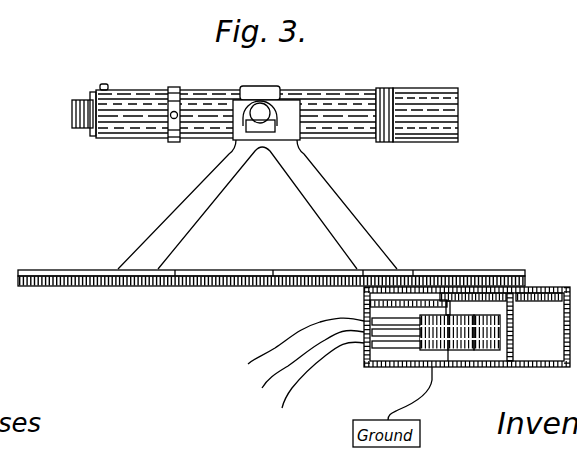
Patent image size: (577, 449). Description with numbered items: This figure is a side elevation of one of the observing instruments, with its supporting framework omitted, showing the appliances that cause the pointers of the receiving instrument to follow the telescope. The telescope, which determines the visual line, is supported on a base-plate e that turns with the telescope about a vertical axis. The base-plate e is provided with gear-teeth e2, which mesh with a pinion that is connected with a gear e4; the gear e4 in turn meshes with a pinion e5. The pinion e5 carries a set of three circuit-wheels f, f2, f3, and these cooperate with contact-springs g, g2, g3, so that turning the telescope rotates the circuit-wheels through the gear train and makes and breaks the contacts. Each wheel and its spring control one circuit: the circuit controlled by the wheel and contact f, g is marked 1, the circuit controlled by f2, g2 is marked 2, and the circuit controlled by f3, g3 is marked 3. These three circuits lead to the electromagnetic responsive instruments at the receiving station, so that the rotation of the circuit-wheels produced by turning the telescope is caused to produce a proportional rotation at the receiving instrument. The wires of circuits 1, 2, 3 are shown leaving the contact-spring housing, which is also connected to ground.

The base-plate e is at (292, 289).
The gear-teeth e2 is at (292, 287).
The gear e4 is at (541, 301).
The pinion e5 is at (455, 301).
The circuit-wheel f is at (434, 351).
The circuit-wheel f2 is at (460, 351).
The circuit-wheel f3 is at (486, 351).
The contact-spring g is at (374, 322).
The contact-spring g2 is at (374, 333).
The contact-spring g3 is at (396, 349).
The circuit 1 is at (299, 347).
The circuit 2 is at (306, 365).
The circuit 3 is at (318, 380).